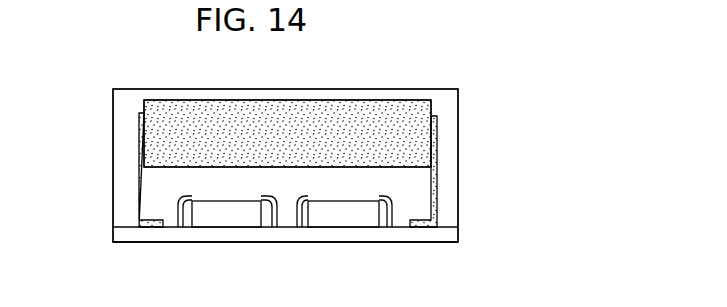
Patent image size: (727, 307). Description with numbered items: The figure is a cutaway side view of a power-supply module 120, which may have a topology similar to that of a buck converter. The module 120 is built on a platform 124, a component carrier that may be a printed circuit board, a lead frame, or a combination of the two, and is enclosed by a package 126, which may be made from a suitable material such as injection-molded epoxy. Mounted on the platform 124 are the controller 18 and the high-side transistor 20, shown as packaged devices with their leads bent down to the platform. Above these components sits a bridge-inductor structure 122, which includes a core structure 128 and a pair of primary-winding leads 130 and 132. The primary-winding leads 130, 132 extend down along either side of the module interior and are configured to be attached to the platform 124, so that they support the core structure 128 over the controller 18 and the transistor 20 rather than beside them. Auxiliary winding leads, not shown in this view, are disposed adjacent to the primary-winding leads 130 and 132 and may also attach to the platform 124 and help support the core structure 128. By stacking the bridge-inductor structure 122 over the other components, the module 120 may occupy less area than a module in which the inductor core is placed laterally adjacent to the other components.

The power-supply module 120 is at (347, 49).
The bridge-inductor structure 122 is at (201, 81).
The platform 124 is at (113, 232).
The package 126 is at (432, 89).
The core structure 128 is at (305, 155).
The primary-winding lead 130 is at (139, 172).
The primary-winding lead 132 is at (437, 148).
The controller 18 is at (207, 227).
The high-side transistor 20 is at (363, 227).